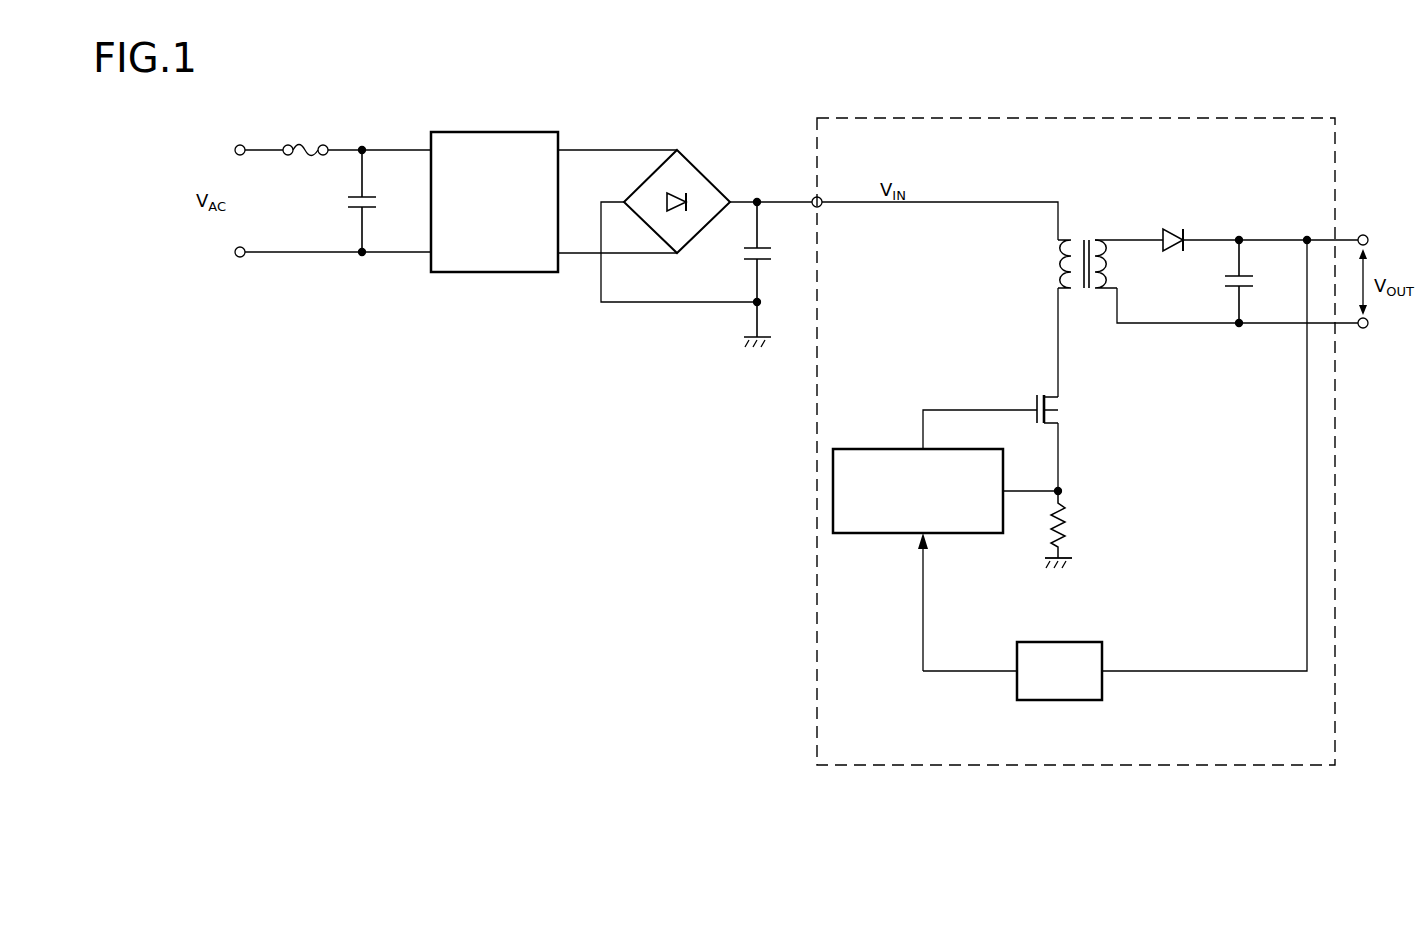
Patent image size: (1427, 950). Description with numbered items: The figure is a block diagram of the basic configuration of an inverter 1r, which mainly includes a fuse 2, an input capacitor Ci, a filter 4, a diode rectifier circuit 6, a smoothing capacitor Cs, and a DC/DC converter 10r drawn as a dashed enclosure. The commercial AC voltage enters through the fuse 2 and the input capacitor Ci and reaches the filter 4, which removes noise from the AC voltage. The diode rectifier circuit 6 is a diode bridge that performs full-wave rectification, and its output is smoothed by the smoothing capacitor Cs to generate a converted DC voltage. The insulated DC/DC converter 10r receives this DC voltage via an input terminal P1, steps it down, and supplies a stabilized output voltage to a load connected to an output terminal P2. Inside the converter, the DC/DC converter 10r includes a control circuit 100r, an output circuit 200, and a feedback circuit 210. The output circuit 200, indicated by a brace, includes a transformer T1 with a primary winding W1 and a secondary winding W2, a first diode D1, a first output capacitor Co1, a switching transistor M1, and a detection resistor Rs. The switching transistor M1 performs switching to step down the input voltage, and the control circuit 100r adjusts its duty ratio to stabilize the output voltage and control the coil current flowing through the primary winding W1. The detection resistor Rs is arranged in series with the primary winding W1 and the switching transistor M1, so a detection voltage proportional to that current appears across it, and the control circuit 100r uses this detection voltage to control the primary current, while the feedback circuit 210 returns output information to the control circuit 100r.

The fuse 2 is at (304, 139).
The filter 4 is at (507, 132).
The diode rectifier circuit 6 is at (702, 178).
The DC/DC converter 10r is at (996, 118).
The input terminal P1 is at (822, 207).
The output terminal P2 is at (1363, 233).
The input capacitor Ci is at (342, 205).
The smoothing capacitor Cs is at (738, 256).
The transformer T1 is at (1100, 218).
The primary winding W1 is at (1072, 236).
The secondary winding W2 is at (1116, 237).
The first diode D1 is at (1176, 228).
The first output capacitor Co1 is at (1218, 281).
The switching transistor M1 is at (1066, 408).
The detection resistor Rs is at (1068, 528).
The control circuit 100r is at (864, 534).
The output circuit 200 is at (1017, 574).
The feedback circuit 210 is at (1060, 702).
The inverter 1r is at (824, 856).